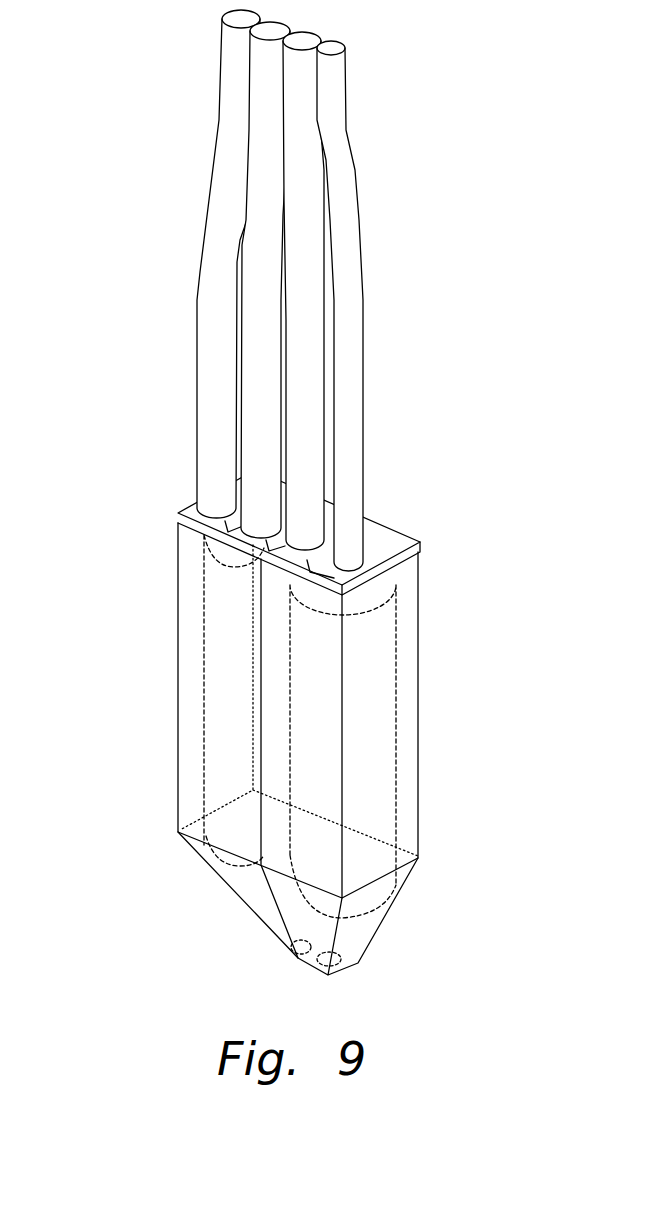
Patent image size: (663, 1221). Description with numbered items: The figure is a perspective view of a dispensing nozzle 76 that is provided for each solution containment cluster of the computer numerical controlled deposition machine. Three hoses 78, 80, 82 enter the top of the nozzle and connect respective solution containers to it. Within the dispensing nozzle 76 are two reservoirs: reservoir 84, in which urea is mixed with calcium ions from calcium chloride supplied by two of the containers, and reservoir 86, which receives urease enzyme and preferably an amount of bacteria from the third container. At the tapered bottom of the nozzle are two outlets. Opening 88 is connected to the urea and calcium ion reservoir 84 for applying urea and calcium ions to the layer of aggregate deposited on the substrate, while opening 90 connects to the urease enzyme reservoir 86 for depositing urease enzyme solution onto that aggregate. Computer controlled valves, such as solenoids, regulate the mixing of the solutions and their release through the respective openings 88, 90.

The dispensing nozzle 76 is at (281, 516).
The hose 78 is at (304, 316).
The hose 80 is at (217, 274).
The hose 82 is at (273, 173).
The reservoir 84 is at (240, 620).
The reservoir 86 is at (363, 673).
The opening 88 is at (295, 955).
The opening 90 is at (345, 963).